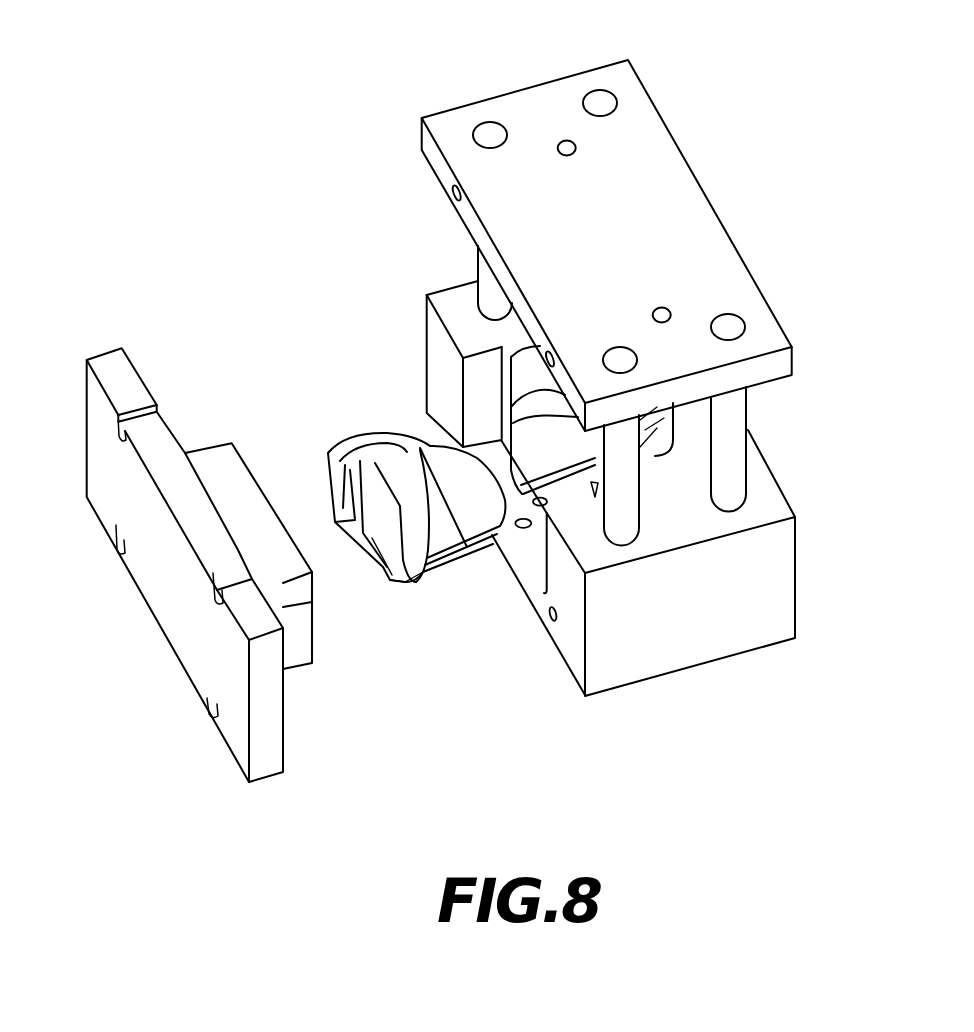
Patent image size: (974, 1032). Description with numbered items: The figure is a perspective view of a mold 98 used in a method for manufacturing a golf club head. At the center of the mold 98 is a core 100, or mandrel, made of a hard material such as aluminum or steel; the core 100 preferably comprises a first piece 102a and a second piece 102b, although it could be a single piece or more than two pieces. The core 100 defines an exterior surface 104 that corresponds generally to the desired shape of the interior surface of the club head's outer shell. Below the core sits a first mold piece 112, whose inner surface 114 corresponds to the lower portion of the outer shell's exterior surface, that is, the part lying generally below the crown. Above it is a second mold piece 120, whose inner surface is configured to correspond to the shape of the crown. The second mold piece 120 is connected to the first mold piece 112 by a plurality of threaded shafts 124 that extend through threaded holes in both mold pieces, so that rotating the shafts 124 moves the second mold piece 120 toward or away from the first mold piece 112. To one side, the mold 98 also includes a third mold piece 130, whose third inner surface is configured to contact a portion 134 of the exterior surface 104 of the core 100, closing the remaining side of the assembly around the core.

The mold 98 is at (732, 128).
The second mold piece 120 is at (790, 279).
The shafts 124 is at (740, 467).
The first mold piece 112 is at (828, 587).
The inner surface 114 is at (529, 448).
The core 100 is at (356, 418).
The exterior surface 104 is at (452, 530).
The first piece 102a is at (412, 580).
The second piece 102b is at (328, 453).
The portion 134 is at (387, 580).
The third mold piece 130 is at (210, 784).